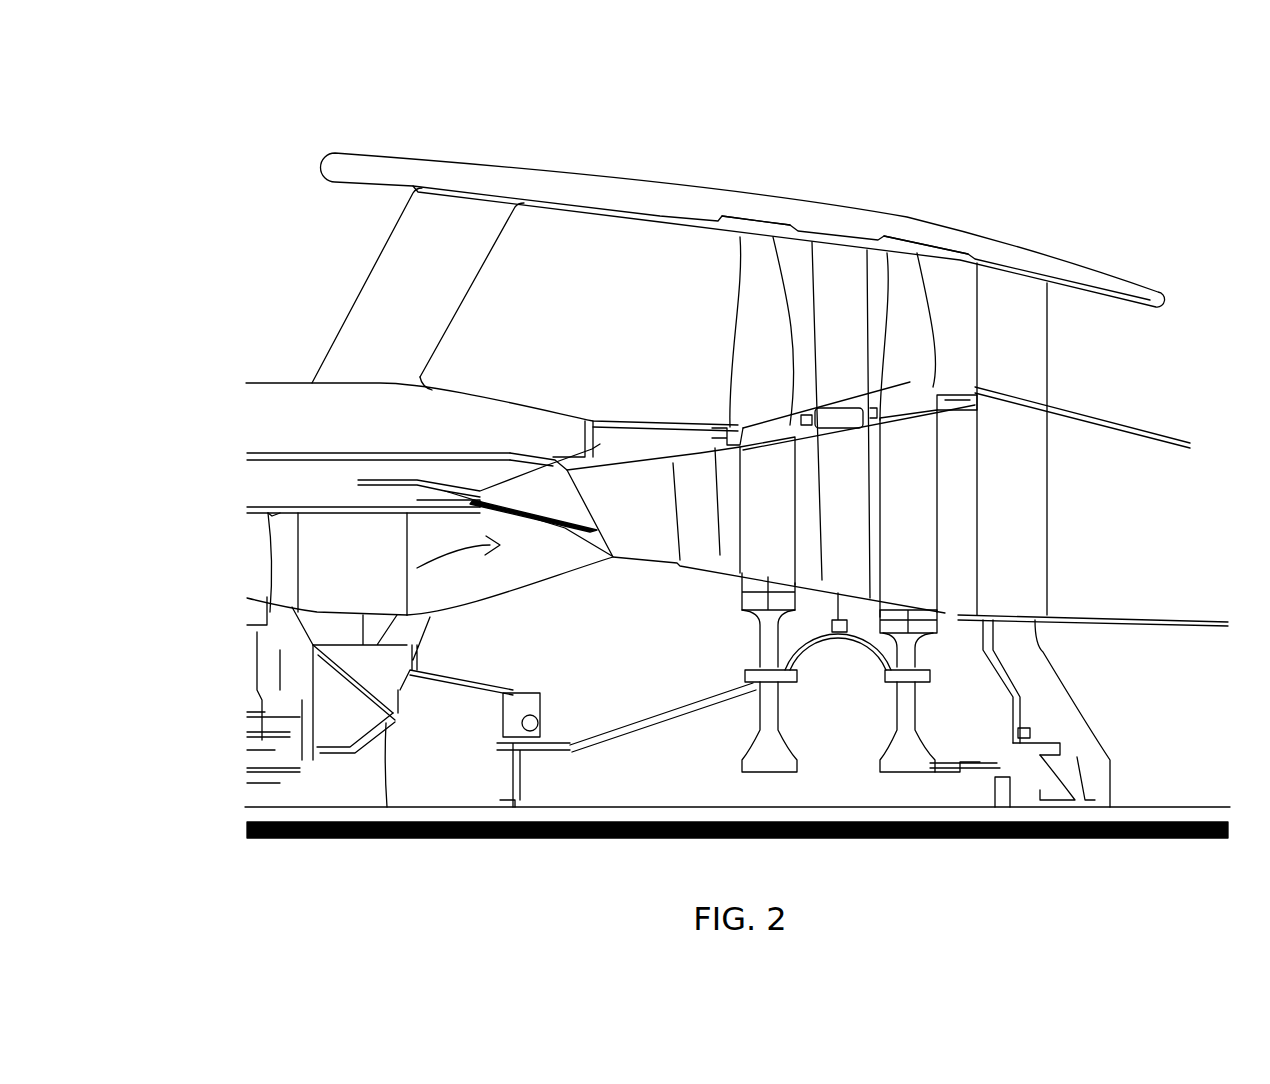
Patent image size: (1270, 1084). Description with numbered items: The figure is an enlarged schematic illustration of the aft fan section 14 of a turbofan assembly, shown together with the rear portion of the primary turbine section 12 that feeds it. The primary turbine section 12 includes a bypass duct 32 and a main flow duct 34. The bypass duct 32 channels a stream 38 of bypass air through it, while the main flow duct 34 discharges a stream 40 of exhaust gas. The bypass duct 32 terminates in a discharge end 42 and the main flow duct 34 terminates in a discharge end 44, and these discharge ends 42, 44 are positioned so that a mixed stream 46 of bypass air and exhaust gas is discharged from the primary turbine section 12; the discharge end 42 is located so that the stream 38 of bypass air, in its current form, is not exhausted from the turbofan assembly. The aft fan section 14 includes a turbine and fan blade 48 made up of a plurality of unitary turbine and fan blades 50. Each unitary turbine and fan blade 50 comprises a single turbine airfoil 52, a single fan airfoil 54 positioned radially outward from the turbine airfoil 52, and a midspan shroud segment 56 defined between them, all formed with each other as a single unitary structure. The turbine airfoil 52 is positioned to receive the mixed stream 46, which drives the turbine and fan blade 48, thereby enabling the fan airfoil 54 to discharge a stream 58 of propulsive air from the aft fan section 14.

The primary turbine section 12 is at (226, 333).
The aft fan section 14 is at (1076, 120).
The bypass duct 32 is at (340, 473).
The main flow duct 34 is at (250, 582).
The stream of bypass air 38 is at (298, 492).
The stream of exhaust gas 40 is at (470, 560).
The discharge end of bypass duct 42 is at (506, 460).
The discharge end of main flow duct 44 is at (434, 606).
The mixed stream of bypass air and exhaust gas 46 is at (610, 513).
The turbine and fan blade 48 is at (728, 645).
The unitary turbine and fan blade 50 is at (725, 240).
The turbine airfoil 52 is at (744, 515).
The fan airfoil 54 is at (747, 349).
The midspan shroud segment 56 is at (740, 410).
The stream of propulsive air 58 is at (1070, 357).